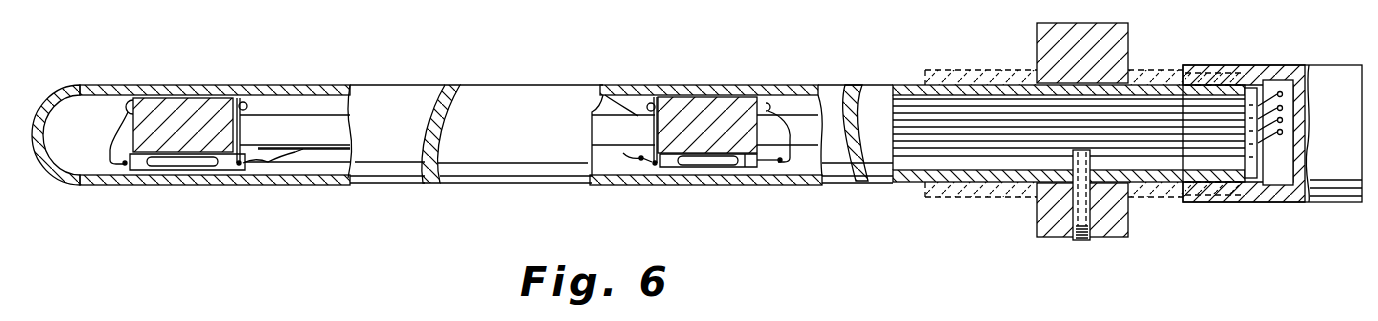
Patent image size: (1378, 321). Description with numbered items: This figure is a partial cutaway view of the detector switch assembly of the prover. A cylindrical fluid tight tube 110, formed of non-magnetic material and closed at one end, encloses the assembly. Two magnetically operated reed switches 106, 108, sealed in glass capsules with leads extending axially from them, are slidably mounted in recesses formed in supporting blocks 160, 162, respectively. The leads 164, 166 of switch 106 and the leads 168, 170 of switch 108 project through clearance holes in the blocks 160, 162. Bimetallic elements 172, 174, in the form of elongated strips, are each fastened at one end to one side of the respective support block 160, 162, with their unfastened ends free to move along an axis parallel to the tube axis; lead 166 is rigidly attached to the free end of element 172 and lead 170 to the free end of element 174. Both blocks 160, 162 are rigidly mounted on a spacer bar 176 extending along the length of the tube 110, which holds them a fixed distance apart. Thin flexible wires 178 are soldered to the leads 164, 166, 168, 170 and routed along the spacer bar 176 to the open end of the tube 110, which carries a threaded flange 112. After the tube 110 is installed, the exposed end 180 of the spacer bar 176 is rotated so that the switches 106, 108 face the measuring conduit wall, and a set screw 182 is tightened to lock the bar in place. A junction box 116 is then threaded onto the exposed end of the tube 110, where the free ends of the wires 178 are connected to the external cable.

The magnetically operated reed switch 106 is at (184, 167).
The magnetically operated reed switch 108 is at (712, 161).
The fluid tight tube 110 is at (488, 189).
The threaded flange 112 is at (1132, 212).
The junction box 116 is at (1329, 62).
The supporting block 160 is at (180, 98).
The supporting block 162 is at (697, 105).
The lead 164 is at (143, 165).
The lead 166 is at (243, 165).
The lead 168 is at (771, 167).
The lead 170 is at (672, 161).
The bimetallic element 172 is at (243, 127).
The bimetallic element 174 is at (652, 106).
The spacer bar 176 is at (325, 134).
The thin flexible wires 178 is at (127, 105).
The exposed end of spacer bar 180 is at (1246, 88).
The set screw 182 is at (1088, 241).